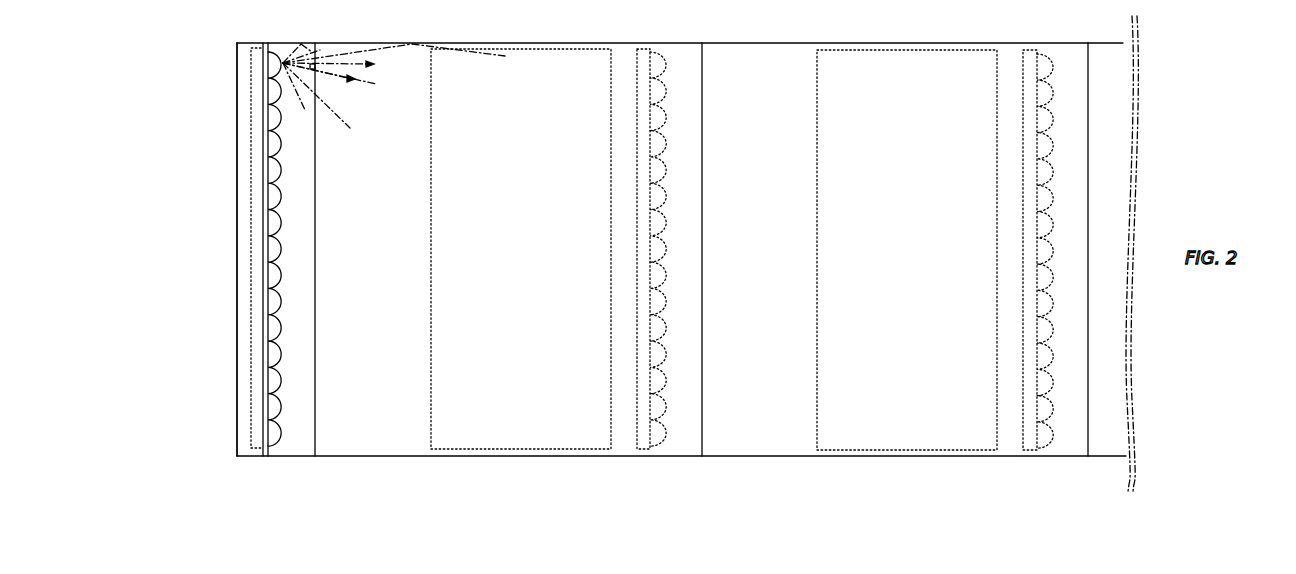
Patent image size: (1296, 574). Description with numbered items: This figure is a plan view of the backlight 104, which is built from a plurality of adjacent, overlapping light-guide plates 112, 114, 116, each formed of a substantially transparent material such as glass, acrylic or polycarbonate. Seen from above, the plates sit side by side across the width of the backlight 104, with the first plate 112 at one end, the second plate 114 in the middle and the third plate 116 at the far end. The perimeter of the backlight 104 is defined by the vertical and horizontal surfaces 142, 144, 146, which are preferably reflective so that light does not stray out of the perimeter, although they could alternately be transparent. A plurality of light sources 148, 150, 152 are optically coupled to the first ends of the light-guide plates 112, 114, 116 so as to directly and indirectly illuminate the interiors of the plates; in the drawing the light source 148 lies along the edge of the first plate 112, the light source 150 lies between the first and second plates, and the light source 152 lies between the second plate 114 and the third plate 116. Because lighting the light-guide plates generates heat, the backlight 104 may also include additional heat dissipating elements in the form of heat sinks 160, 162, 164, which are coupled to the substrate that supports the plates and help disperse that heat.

The backlight 104 is at (224, 89).
The light-guide plate 112 is at (377, 330).
The light-guide plate 114 is at (871, 250).
The light-guide plate 116 is at (1116, 254).
The perimeter surface 142 is at (727, 43).
The perimeter surface 144 is at (236, 272).
The perimeter surface 146 is at (389, 457).
The light source 148 is at (282, 270).
The light source 150 is at (667, 272).
The light source 152 is at (1053, 275).
The heat sink 160 is at (250, 430).
The heat sink 162 is at (521, 249).
The heat sink 164 is at (636, 430).